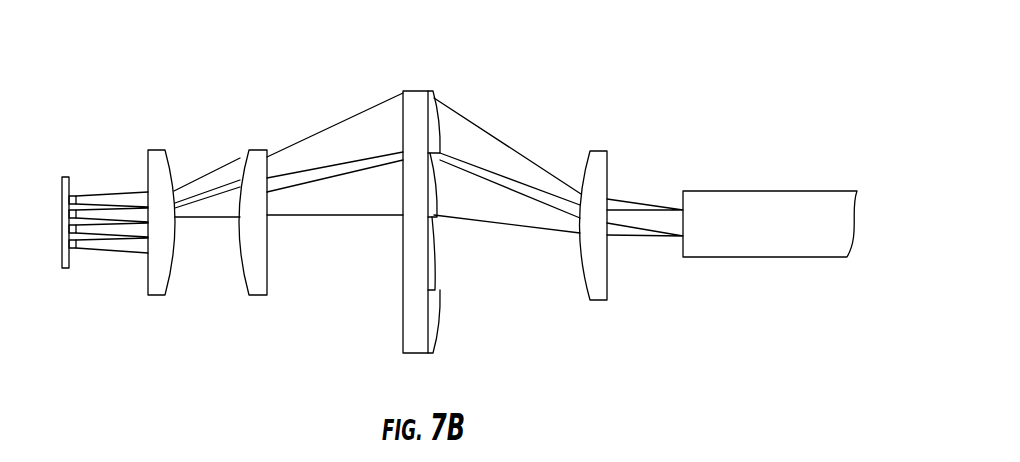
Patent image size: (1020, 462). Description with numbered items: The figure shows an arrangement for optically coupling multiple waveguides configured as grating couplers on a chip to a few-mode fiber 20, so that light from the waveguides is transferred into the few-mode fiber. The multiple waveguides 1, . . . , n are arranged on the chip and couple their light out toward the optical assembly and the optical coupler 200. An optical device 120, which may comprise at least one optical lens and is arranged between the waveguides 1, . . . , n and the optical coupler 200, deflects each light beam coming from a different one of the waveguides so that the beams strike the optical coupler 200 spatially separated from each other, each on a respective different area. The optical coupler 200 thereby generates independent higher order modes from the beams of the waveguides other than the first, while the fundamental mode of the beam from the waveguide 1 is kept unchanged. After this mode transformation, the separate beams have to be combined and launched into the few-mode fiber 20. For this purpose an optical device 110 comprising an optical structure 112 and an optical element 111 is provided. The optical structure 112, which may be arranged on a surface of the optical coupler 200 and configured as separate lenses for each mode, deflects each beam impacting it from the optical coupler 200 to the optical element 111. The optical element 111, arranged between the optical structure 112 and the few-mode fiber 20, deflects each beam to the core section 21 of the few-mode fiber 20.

The waveguide 1 is at (74, 195).
The waveguide n is at (74, 250).
The optical device 120 is at (258, 150).
The optical coupler 200 is at (421, 91).
The optical device 110 is at (543, 222).
The optical structure 112 is at (435, 330).
The optical element 111 is at (598, 277).
The few-mode fiber 20 is at (770, 196).
The core section 21 is at (710, 226).